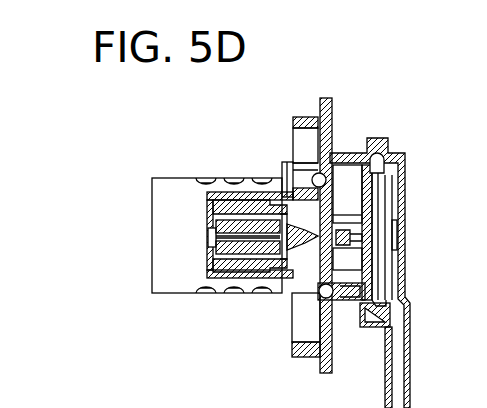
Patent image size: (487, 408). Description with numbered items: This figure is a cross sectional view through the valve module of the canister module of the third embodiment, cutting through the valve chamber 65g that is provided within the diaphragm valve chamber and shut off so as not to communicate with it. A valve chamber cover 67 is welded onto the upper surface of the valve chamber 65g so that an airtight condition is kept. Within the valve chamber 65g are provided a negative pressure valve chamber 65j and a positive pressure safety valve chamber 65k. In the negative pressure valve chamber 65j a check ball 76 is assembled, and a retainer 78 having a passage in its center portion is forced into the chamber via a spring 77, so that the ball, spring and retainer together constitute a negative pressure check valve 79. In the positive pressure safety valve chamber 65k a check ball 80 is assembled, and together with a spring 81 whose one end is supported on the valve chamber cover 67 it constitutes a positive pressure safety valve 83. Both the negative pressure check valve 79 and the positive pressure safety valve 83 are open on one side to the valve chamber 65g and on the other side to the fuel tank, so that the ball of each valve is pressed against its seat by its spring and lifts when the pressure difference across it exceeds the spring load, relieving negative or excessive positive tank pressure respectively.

The negative pressure valve chamber 65j is at (296, 168).
The negative pressure check valve 79 is at (296, 160).
The retainer 78 is at (292, 163).
The spring 77 is at (310, 178).
The check ball 76 is at (300, 148).
The valve chamber 65g is at (345, 180).
The valve chamber cover 67 is at (383, 170).
The positive pressure safety valve 83 is at (300, 290).
The check ball 80 is at (318, 300).
The spring 81 is at (338, 298).
The positive pressure safety valve chamber 65k is at (332, 300).